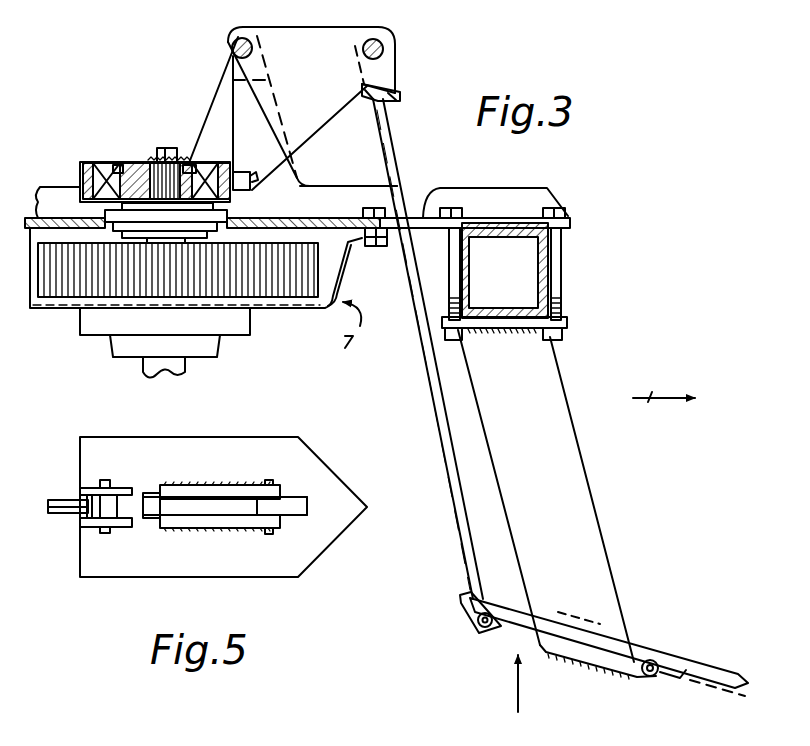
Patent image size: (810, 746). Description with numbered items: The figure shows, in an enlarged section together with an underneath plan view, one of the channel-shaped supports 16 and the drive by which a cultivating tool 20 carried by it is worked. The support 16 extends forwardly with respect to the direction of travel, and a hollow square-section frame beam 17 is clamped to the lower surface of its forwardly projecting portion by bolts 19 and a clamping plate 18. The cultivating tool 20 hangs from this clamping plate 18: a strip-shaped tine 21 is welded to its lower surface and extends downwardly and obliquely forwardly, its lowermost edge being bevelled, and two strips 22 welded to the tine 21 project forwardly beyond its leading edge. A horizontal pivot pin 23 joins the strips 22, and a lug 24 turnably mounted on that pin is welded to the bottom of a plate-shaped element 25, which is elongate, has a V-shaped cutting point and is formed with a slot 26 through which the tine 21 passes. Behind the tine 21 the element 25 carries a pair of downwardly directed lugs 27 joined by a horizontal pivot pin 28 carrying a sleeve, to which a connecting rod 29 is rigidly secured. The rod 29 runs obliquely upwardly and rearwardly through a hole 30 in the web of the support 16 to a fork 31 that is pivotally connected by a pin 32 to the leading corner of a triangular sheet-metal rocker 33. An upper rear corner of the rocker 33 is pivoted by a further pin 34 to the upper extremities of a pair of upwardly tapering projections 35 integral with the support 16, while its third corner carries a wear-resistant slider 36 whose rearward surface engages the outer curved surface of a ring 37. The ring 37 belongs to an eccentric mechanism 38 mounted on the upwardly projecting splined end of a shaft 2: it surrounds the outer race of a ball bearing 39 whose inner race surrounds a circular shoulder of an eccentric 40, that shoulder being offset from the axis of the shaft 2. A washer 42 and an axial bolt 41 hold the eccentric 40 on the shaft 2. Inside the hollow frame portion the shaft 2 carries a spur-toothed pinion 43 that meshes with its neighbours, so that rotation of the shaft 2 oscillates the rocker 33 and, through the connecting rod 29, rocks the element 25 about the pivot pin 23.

In FIG. 3, the shaft 2 is at (196, 164).
In FIG. 3, the support 16 is at (327, 197).
In FIG. 3, the frame beam 17 is at (556, 256).
In FIG. 3, the clamping plate 18 is at (496, 331).
In FIG. 3, the bolt 19 is at (460, 270).
In FIG. 3, the cultivating tool 20 is at (608, 528).
In FIG. 5, the cultivating tool 20 is at (283, 422).
In FIG. 3, the tine 21 is at (582, 468).
In FIG. 5, the tine 21 is at (205, 500).
In FIG. 3, the strip 22 is at (598, 655).
In FIG. 5, the strip 22 is at (278, 494).
In FIG. 3, the pivot pin 23 is at (652, 659).
In FIG. 5, the pivot pin 23 is at (282, 468).
In FIG. 3, the lug 24 is at (675, 676).
In FIG. 5, the lug 24 is at (312, 518).
In FIG. 3, the plate-shaped element 25 is at (700, 660).
In FIG. 5, the plate-shaped element 25 is at (180, 560).
In FIG. 3, the slot 26 is at (563, 623).
In FIG. 5, the slot 26 is at (153, 495).
In FIG. 3, the lug 27 is at (462, 605).
In FIG. 5, the lug 27 is at (108, 488).
In FIG. 3, the pivot pin 28 is at (478, 629).
In FIG. 5, the pivot pin 28 is at (110, 530).
In FIG. 3, the connecting rod 29 is at (430, 380).
In FIG. 5, the connecting rod 29 is at (55, 500).
In FIG. 3, the hole 30 is at (432, 199).
In FIG. 3, the fork 31 is at (392, 84).
In FIG. 3, the pin 32 is at (396, 46).
In FIG. 3, the rocker 33 is at (302, 40).
In FIG. 3, the pin 34 is at (232, 42).
In FIG. 3, the upward projection 35 is at (218, 94).
In FIG. 3, the slider 36 is at (248, 193).
In FIG. 3, the ring 37 is at (80, 163).
In FIG. 3, the eccentric mechanism 38 is at (118, 158).
In FIG. 3, the ball bearing 39 is at (216, 170).
In FIG. 3, the eccentric 40 is at (118, 158).
In FIG. 3, the axial bolt 41 is at (182, 152).
In FIG. 3, the washer 42 is at (148, 158).
In FIG. 3, the pinion 43 is at (292, 290).